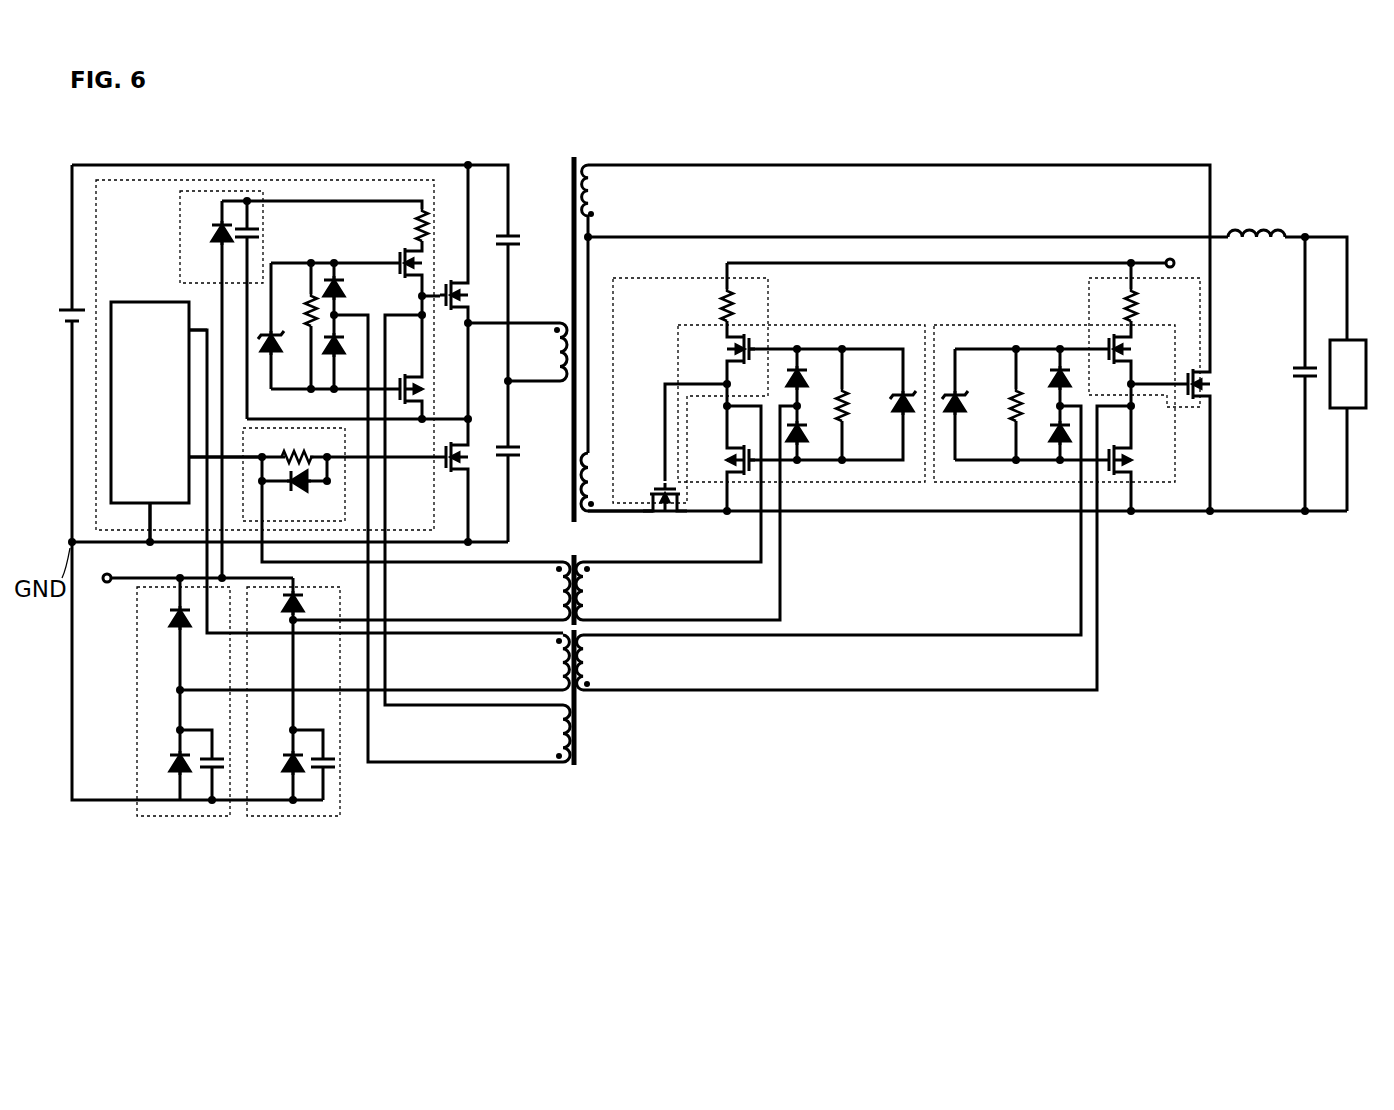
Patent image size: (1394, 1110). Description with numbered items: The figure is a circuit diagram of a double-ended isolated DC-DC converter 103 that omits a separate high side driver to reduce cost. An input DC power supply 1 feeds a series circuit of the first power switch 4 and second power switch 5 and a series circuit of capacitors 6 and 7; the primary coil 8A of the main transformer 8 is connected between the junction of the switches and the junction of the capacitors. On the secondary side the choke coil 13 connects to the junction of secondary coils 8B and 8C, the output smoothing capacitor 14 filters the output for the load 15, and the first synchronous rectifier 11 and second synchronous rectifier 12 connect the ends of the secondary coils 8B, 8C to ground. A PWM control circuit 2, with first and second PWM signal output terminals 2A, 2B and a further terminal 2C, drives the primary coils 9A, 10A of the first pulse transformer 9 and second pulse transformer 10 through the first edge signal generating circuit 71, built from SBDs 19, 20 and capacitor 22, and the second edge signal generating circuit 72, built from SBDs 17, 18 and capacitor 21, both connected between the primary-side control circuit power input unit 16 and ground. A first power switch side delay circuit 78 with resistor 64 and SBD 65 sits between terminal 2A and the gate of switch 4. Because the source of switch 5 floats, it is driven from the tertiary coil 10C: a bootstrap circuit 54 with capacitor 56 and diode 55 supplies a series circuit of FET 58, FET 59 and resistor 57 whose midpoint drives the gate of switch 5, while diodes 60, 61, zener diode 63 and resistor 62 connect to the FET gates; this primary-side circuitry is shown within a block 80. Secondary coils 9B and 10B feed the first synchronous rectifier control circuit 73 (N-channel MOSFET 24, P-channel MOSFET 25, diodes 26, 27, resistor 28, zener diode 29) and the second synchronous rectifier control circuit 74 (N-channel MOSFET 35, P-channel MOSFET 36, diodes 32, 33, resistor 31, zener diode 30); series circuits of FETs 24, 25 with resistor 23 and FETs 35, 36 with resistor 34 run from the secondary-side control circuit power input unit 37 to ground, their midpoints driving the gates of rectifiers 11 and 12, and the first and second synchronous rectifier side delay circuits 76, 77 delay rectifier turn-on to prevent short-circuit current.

The input DC power supply 1 is at (59, 317).
The PWM control circuit 2 is at (138, 302).
The first PWM signal output terminal 2A is at (207, 457).
The second PWM signal output terminal 2B is at (179, 330).
The ground terminal of control IC 2C is at (152, 509).
The first power switch 4 is at (454, 470).
The second power switch 5 is at (454, 284).
The capacitor 6 is at (499, 242).
The capacitor 7 is at (503, 437).
The main transformer 8 is at (585, 318).
The primary coil 8A is at (542, 352).
The secondary coil 8B is at (580, 460).
The secondary coil 8C is at (607, 309).
The first pulse transformer 9 is at (574, 564).
The primary coil 9A is at (543, 591).
The secondary coil 9B is at (603, 591).
The second pulse transformer 10 is at (577, 697).
The primary coil 10A is at (540, 662).
The secondary coil 10B is at (609, 662).
The tertiary coil 10C is at (541, 733).
The first synchronous rectifier 11 is at (655, 498).
The second synchronous rectifier 12 is at (1216, 384).
The choke coil 13 is at (1256, 214).
The output smoothing capacitor 14 is at (1291, 373).
The load 15 is at (1358, 340).
The primary-side control circuit power input unit 16 is at (98, 595).
The schottky barrier diode 17 is at (165, 619).
The schottky barrier diode 18 is at (165, 764).
The schottky barrier diode 19 is at (279, 611).
The schottky barrier diode 20 is at (278, 764).
The capacitor 21 is at (216, 772).
The capacitor 22 is at (330, 770).
The resistor 23 is at (745, 305).
The N-channel MOSFET 24 is at (725, 349).
The P-channel MOSFET 25 is at (725, 460).
The diode 26 is at (812, 378).
The diode 27 is at (812, 433).
The resistor 28 is at (858, 405).
The zener diode 29 is at (897, 412).
The zener diode 30 is at (962, 413).
The resistor 31 is at (1003, 405).
The diode 32 is at (1047, 378).
The diode 33 is at (1047, 433).
The resistor 34 is at (1148, 305).
The N-channel MOSFET 35 is at (1137, 349).
The P-channel MOSFET 36 is at (1137, 460).
The secondary-side control circuit power input unit 37 is at (1188, 264).
The bootstrap circuit 54 is at (207, 191).
The diode 55 is at (208, 234).
The capacitor 56 is at (265, 234).
The resistor 57 is at (409, 225).
The FET 58 is at (406, 274).
The FET 59 is at (406, 379).
The diode 60 is at (349, 289).
The diode 61 is at (346, 358).
The resistor 62 is at (297, 310).
The zener diode 63 is at (282, 357).
The resistor 64 is at (298, 446).
The schottky barrier diode 65 is at (298, 494).
The first edge signal generating circuit 71 is at (340, 816).
The second edge signal generating circuit 72 is at (137, 816).
The first synchronous rectifier control circuit 73 is at (840, 325).
The second synchronous rectifier control circuit 74 is at (1020, 325).
The first synchronous rectifier side delay circuit 76 is at (685, 278).
The second synchronous rectifier side delay circuit 77 is at (1089, 276).
The first power switch side delay circuit 78 is at (345, 490).
The control circuit 80 is at (323, 180).
The double-ended isolated DC-DC converter 103 is at (1237, 114).